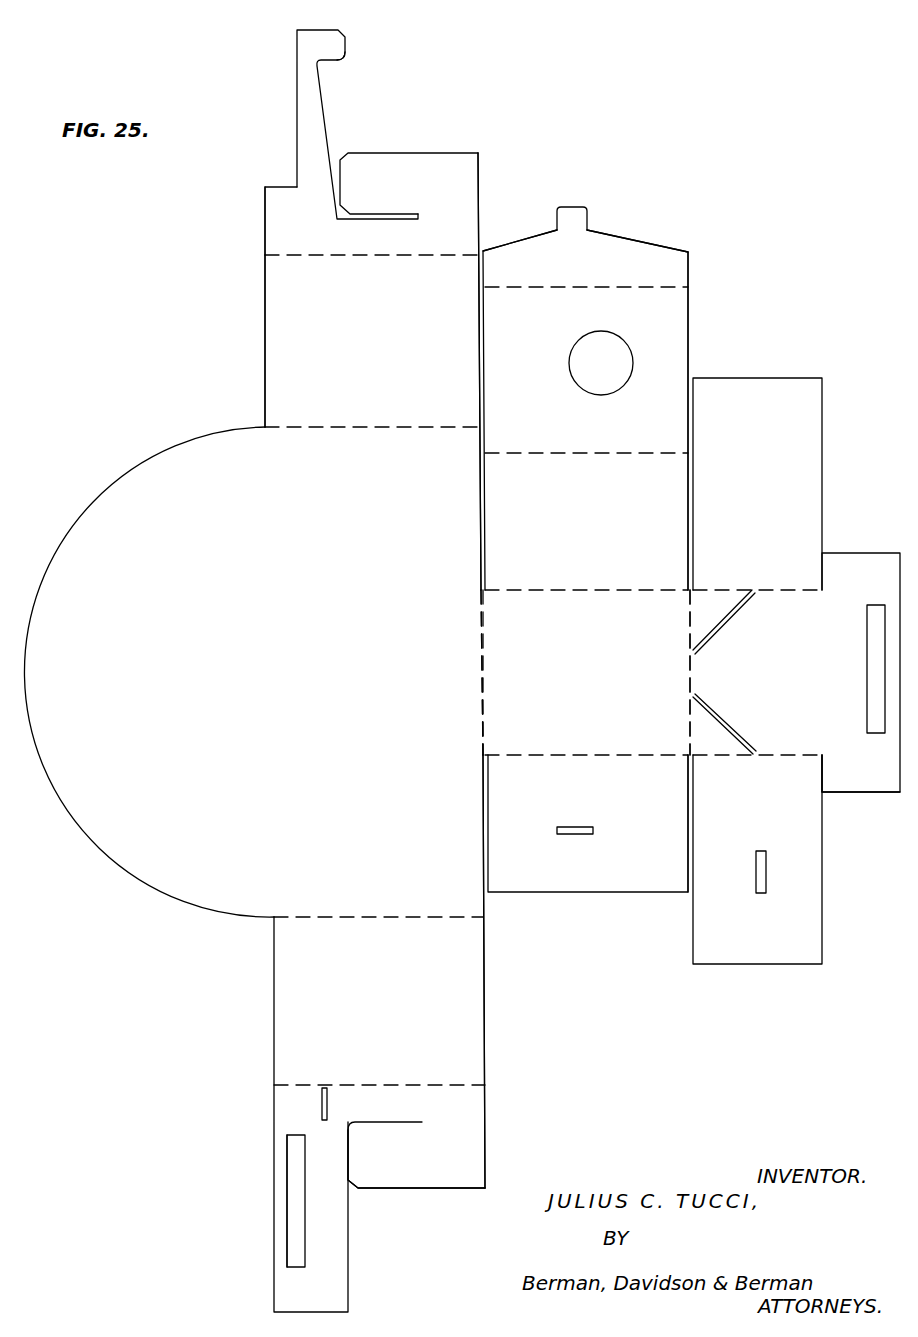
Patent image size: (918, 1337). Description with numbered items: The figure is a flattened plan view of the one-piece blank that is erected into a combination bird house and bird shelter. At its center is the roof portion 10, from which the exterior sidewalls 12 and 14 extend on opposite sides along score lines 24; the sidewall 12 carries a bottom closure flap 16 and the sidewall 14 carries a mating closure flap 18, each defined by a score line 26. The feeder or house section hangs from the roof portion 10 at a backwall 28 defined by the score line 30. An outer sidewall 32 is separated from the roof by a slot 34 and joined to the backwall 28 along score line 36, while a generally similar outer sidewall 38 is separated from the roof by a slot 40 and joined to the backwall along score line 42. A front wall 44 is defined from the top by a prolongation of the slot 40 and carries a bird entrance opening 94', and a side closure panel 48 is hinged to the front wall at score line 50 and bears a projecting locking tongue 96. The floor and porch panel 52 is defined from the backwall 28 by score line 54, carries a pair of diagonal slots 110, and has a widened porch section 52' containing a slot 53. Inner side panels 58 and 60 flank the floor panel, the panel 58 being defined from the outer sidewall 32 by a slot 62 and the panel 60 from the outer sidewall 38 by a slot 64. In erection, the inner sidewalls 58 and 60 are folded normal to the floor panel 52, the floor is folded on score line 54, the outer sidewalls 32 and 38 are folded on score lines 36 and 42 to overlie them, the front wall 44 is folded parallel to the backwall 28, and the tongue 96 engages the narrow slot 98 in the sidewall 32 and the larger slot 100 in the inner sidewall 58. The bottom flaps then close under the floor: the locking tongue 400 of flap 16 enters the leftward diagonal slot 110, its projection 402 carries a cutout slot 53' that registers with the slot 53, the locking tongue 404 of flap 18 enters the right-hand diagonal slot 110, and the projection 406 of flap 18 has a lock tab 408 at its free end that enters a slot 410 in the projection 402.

The roof portion 10 is at (149, 672).
The shelter side wall 12 is at (380, 992).
The shelter side wall 14 is at (309, 341).
The bottom closure flap 16 is at (458, 1134).
The mating closure flap 18 is at (302, 238).
The score lines 24 is at (372, 430).
The score lines 26 is at (392, 257).
The backwall 28 is at (586, 672).
The score line 30 is at (478, 660).
The outer feeder sidewall 32 is at (605, 808).
The slot 34 is at (483, 822).
The score line 36 is at (626, 753).
The outer sidewall 38 is at (572, 532).
The slot 40 is at (478, 527).
The score line 42 is at (574, 591).
The front wall 44 is at (585, 410).
The side closure panel 48 is at (592, 272).
The score line 50 is at (516, 289).
The combination bottom floor and porch panel 52 is at (796, 672).
The porch or perch forming section 52' is at (861, 768).
The slot 53 is at (848, 669).
The cutout slot 53' is at (243, 1201).
The score line 54 is at (690, 662).
The inner feeder side panel 58 is at (746, 819).
The inner hopper side panel 60 is at (760, 512).
The slot 62 is at (688, 832).
The slot 64 is at (688, 522).
The bird entrance opening 94' is at (620, 363).
The locking tongue 96 is at (575, 209).
The narrow slot 98 is at (566, 836).
The slot 100 is at (766, 865).
The diagonal slots 110 is at (728, 708).
The locking tongue 400 is at (405, 1166).
The projection 402 is at (340, 1180).
The locking tongue 404 is at (405, 196).
The projection 406 is at (300, 149).
The lock tab 408 is at (345, 55).
The slot 410 is at (322, 1106).